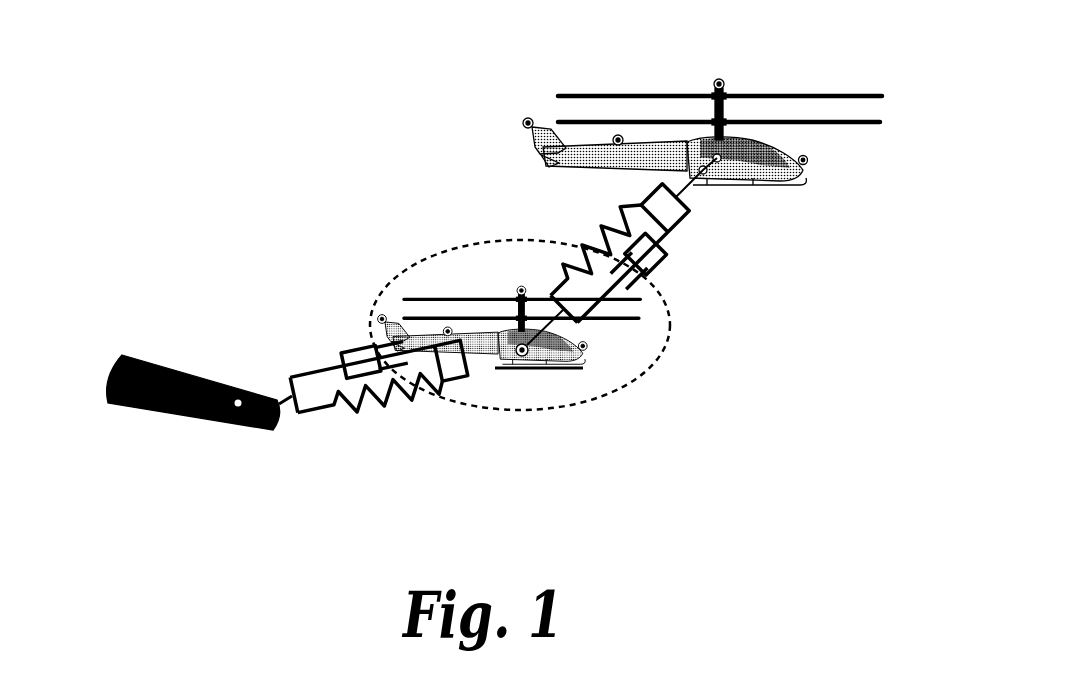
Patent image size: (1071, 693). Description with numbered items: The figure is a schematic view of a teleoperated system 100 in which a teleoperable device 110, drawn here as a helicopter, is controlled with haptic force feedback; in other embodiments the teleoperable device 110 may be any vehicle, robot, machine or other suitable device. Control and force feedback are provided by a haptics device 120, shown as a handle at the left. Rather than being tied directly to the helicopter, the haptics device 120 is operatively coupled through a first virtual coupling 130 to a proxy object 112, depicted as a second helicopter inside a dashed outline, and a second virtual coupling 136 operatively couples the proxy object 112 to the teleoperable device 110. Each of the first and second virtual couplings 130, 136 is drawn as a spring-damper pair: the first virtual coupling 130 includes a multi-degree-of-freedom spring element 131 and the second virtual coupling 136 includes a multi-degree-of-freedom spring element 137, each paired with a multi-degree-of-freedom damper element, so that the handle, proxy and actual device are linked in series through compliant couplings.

The teleoperated system 100 is at (203, 68).
The teleoperable device 110 is at (797, 44).
The proxy object 112 is at (581, 386).
The haptics device 120 is at (155, 356).
The first virtual coupling 130 is at (286, 268).
The multi-degree-of-freedom spring element 131 is at (615, 212).
The second virtual coupling 136 is at (731, 293).
The multi-degree-of-freedom spring element 137 is at (376, 348).